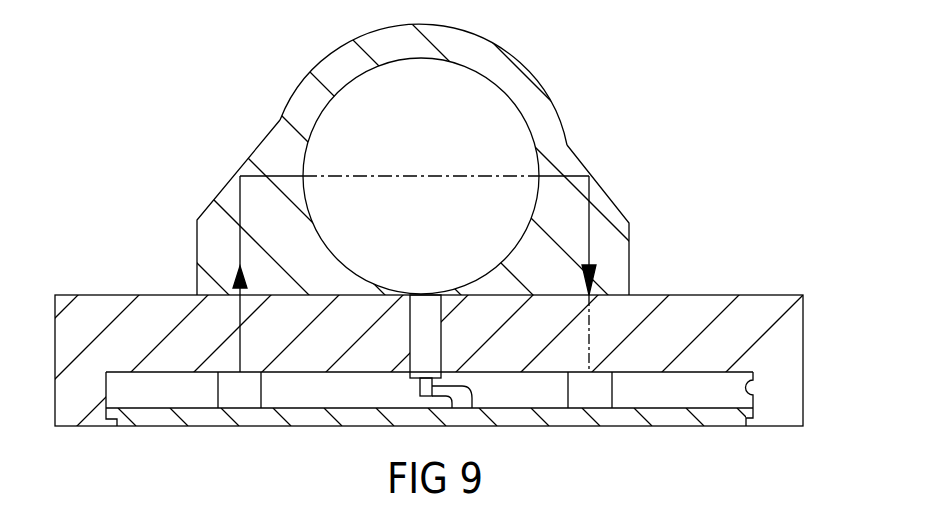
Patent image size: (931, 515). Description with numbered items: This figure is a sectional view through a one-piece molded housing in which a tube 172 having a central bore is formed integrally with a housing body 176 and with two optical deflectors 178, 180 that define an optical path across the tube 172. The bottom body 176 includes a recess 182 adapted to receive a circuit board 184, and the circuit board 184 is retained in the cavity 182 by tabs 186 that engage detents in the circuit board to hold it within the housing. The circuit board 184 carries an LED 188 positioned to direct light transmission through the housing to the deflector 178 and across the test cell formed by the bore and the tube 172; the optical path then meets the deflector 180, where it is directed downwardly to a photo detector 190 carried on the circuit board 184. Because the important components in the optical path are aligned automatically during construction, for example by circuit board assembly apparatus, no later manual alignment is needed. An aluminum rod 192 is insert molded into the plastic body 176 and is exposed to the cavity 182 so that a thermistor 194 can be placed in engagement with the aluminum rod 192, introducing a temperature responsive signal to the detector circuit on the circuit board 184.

The tube 172 is at (332, 76).
The housing body 176 is at (802, 310).
The optical deflector 178 is at (216, 218).
The optical deflector 180 is at (616, 228).
The recess 182 is at (747, 386).
The circuit board 184 is at (203, 428).
The tabs 186 is at (110, 428).
The LED 188 is at (264, 392).
The photo detector 190 is at (612, 393).
The aluminum rod 192 is at (443, 333).
The thermistor 194 is at (427, 397).